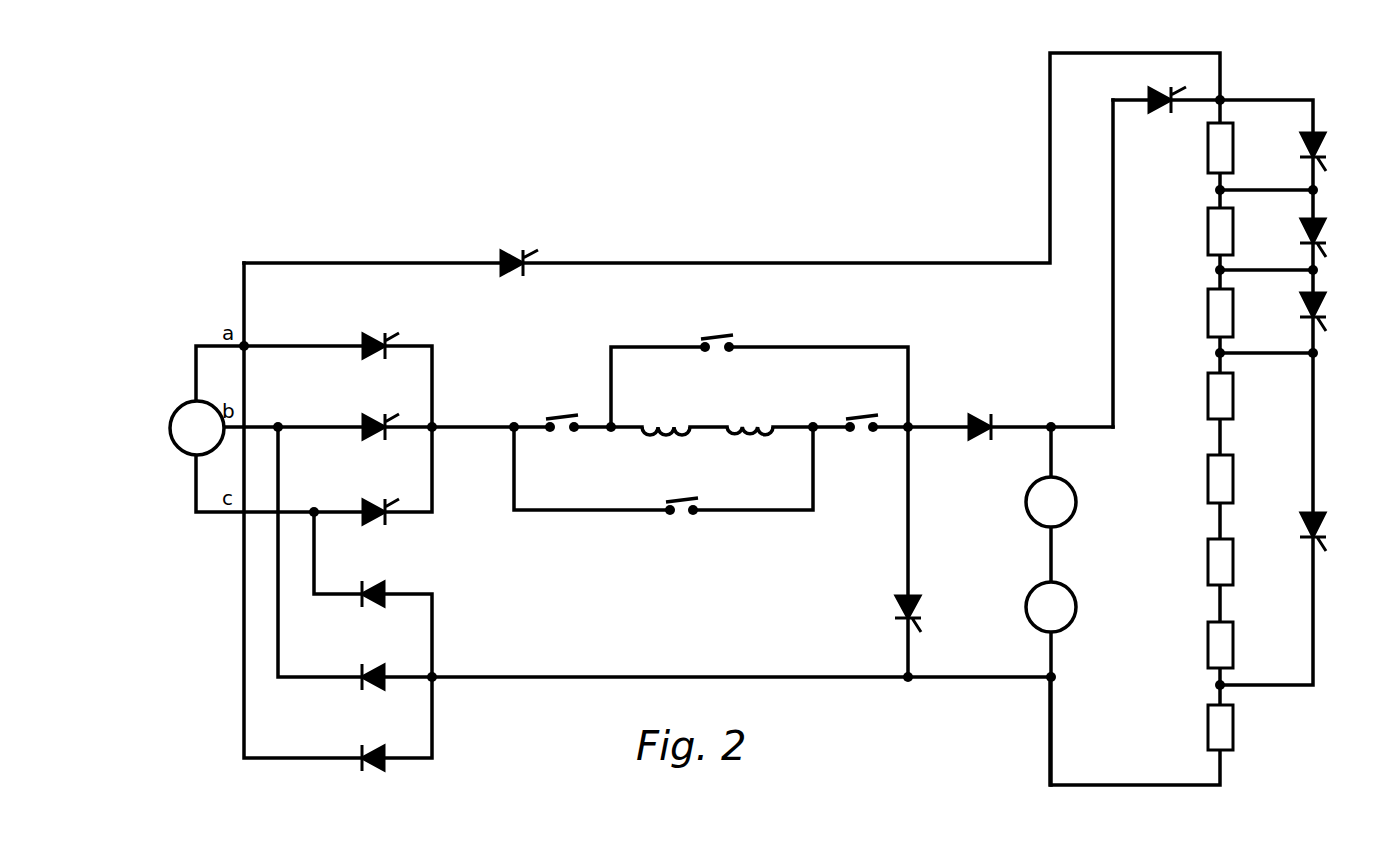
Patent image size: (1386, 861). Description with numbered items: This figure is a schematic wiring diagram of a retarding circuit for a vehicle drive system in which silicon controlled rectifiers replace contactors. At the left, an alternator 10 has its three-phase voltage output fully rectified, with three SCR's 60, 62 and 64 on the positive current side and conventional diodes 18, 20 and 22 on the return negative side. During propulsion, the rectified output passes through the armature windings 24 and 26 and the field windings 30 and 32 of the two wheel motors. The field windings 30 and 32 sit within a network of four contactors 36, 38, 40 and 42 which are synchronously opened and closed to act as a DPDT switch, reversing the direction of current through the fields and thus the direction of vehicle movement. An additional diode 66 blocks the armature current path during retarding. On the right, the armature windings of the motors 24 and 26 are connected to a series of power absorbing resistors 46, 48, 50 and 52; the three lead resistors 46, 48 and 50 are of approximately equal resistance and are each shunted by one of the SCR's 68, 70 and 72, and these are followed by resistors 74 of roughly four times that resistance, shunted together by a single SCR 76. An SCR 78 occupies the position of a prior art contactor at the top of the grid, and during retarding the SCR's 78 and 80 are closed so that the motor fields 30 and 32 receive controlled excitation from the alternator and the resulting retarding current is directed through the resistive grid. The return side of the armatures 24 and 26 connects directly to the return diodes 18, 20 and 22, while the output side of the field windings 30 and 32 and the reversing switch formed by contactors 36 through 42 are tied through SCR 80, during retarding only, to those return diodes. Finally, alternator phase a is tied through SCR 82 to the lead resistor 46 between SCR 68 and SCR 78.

The alternator 10 is at (206, 406).
The diode 18 is at (369, 581).
The diode 20 is at (369, 663).
The diode 22 is at (369, 744).
The armature winding 24 is at (1070, 483).
The armature winding 26 is at (1070, 588).
The field winding 30 is at (746, 428).
The field winding 32 is at (660, 428).
The contactor 36 is at (854, 414).
The contactor 38 is at (556, 414).
The contactor 40 is at (680, 498).
The contactor 42 is at (716, 334).
The lead resistor 46 is at (1234, 148).
The lead resistor 48 is at (1234, 232).
The lead resistor 50 is at (1234, 309).
The power absorbing resistor 52 is at (1234, 725).
The SCR 60 is at (375, 332).
The SCR 62 is at (375, 413).
The SCR 64 is at (375, 498).
The diode 66 is at (974, 415).
The SCR 68 is at (1322, 137).
The SCR 70 is at (1322, 223).
The SCR 72 is at (1322, 299).
The resistors 74 is at (1234, 390).
The SCR 76 is at (1322, 519).
The SCR 78 is at (1156, 90).
The SCR 80 is at (912, 598).
The SCR 82 is at (508, 252).